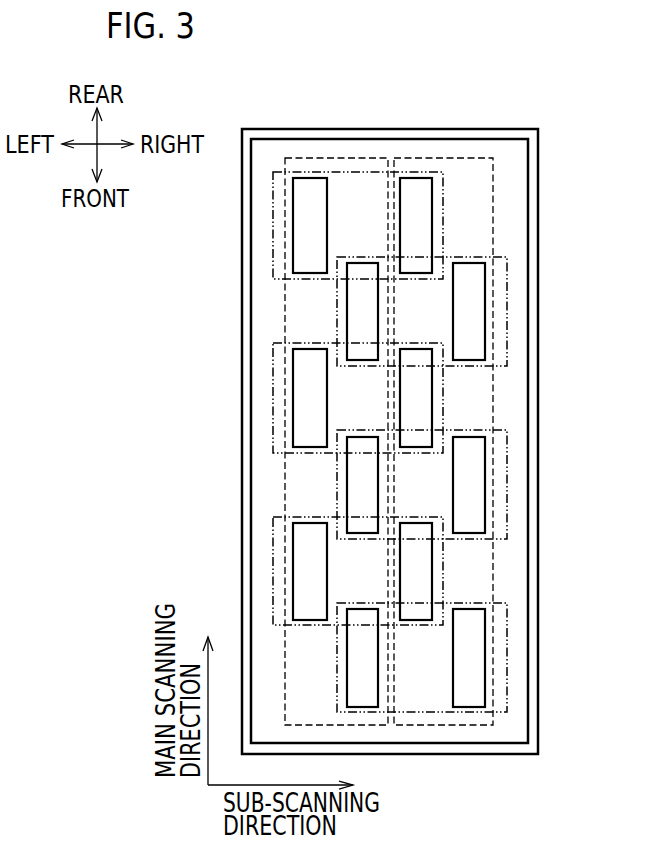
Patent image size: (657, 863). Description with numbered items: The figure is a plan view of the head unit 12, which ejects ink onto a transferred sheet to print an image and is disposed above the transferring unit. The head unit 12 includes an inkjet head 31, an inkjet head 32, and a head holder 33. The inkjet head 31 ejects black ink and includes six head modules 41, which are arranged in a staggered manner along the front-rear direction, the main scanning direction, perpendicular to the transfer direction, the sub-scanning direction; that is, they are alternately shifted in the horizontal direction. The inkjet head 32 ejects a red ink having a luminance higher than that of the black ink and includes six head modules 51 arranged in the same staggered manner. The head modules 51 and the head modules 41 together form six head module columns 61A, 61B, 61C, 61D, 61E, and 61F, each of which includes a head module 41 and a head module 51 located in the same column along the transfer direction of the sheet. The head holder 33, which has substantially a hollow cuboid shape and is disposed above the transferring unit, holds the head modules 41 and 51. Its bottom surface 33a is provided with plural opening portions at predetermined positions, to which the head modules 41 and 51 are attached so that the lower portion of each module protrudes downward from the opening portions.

The head unit 12 is at (424, 410).
The inkjet head 31 is at (330, 157).
The inkjet head 32 is at (437, 157).
The head holder 33 is at (538, 167).
The bottom surface 33a is at (512, 728).
The head module 41 is at (365, 262).
The head module 51 is at (453, 290).
The head module column 61A is at (507, 658).
The head module column 61B is at (443, 565).
The head module column 61C is at (507, 483).
The head module column 61D is at (443, 393).
The head module column 61E is at (507, 312).
The head module column 61F is at (443, 223).